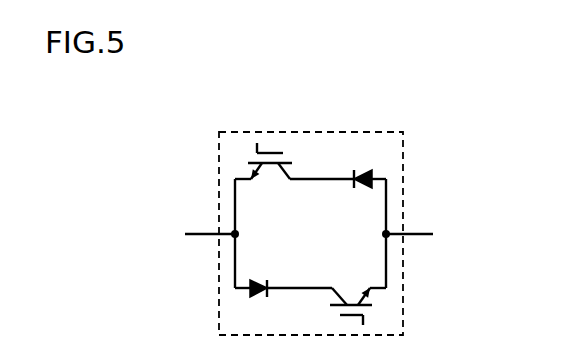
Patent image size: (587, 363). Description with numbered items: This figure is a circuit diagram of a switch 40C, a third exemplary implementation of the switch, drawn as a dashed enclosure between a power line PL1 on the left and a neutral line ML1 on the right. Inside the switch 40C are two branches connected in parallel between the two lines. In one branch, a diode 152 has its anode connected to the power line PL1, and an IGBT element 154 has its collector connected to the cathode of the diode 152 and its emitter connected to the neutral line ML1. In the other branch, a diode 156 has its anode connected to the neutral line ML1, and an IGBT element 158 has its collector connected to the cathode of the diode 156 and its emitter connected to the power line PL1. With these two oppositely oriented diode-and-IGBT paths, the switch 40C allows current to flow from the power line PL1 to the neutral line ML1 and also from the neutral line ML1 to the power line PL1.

The switch 40C is at (365, 132).
The IGBT element 158 is at (268, 172).
The diode 156 is at (353, 170).
The diode 152 is at (267, 279).
The IGBT element 154 is at (352, 291).
The power line PL1 is at (200, 233).
The neutral line ML1 is at (408, 234).